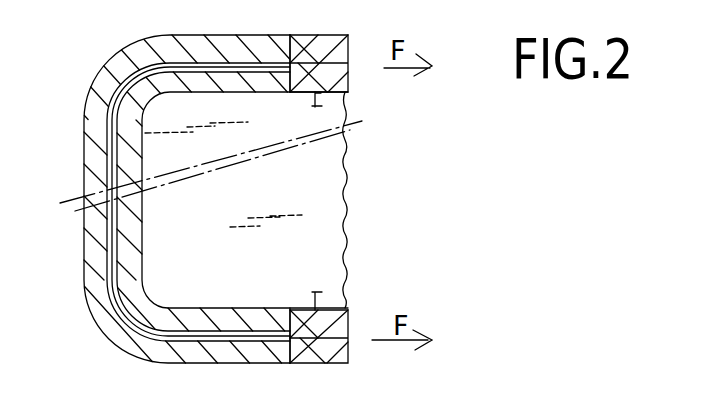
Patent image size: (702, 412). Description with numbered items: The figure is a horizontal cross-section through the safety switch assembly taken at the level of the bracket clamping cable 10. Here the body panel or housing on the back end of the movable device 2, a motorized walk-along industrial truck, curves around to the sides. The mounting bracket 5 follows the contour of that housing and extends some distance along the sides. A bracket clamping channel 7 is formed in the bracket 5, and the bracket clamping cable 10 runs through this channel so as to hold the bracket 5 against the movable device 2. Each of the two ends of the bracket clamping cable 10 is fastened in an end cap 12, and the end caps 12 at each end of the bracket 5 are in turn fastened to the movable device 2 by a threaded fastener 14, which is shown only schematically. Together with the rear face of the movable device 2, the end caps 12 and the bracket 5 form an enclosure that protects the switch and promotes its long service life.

The movable device 2 is at (303, 248).
The mounting bracket 5 is at (112, 78).
The bracket clamping channel 7 is at (110, 135).
The bracket clamping cable 10 is at (85, 158).
The end cap 12 is at (337, 62).
The threaded fastener 14 is at (317, 104).